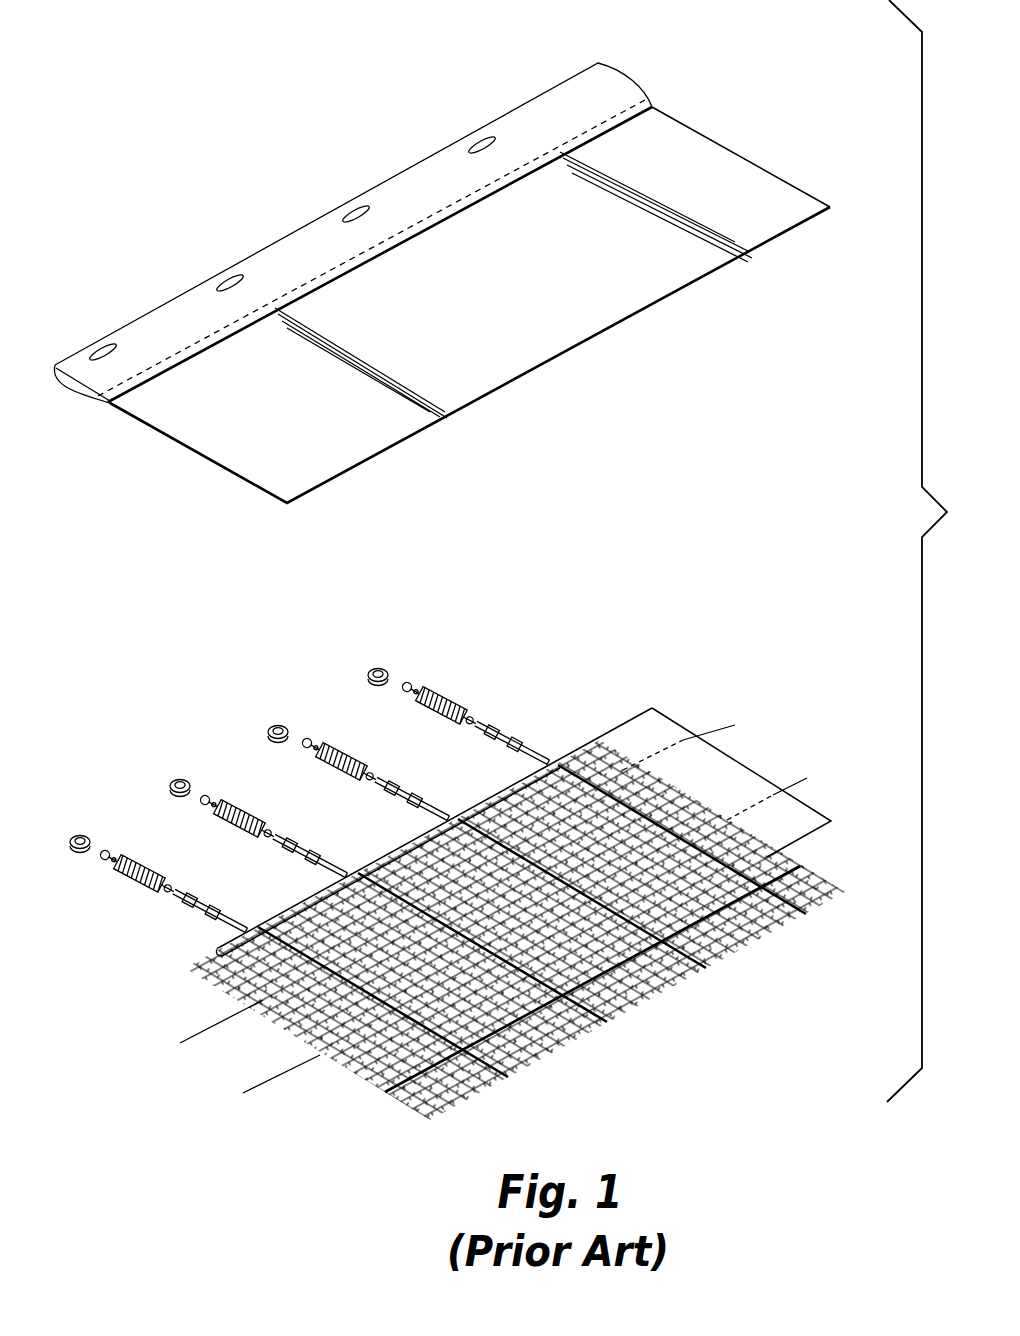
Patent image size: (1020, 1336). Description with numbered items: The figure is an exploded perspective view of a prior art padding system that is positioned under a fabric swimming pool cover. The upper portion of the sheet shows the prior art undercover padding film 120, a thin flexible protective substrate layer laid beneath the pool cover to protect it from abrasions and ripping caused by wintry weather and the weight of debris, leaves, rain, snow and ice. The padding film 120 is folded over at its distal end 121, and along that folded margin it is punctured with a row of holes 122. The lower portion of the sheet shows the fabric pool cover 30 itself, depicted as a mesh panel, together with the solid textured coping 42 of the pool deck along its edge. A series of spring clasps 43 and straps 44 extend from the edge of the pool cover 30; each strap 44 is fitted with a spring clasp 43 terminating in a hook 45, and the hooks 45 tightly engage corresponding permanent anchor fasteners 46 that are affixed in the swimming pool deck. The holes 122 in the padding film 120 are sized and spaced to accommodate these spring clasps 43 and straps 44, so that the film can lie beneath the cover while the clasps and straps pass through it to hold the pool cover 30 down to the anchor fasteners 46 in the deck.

The undercover padding film 120 is at (546, 259).
The distal end 121 is at (563, 104).
The holes 122 is at (232, 276).
The pool cover 30 is at (738, 792).
The solid textured coping 42 is at (716, 778).
The spring clasps 43 is at (145, 865).
The straps 44 is at (203, 905).
The hooks 45 is at (108, 850).
The anchor fasteners 46 is at (81, 835).